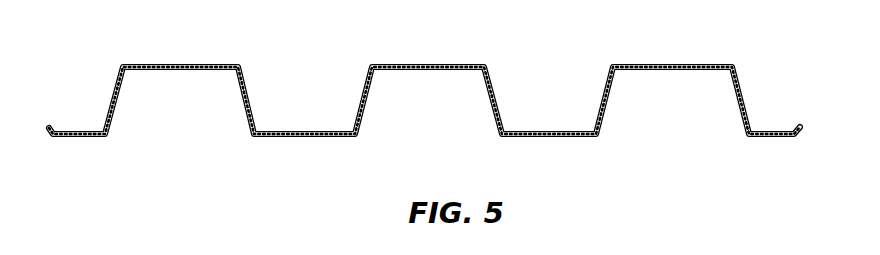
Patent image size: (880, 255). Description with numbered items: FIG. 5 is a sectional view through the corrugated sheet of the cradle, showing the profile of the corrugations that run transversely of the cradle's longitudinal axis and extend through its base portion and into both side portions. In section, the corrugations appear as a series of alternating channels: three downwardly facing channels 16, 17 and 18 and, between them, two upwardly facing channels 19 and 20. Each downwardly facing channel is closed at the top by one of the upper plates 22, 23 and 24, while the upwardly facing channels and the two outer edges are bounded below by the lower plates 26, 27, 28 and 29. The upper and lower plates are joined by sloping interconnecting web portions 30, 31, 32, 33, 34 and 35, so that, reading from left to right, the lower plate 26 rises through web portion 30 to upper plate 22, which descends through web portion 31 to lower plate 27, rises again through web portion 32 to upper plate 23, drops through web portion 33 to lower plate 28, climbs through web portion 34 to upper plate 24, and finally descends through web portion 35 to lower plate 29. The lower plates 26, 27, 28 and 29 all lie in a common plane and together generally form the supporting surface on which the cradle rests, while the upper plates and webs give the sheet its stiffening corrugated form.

The downwardly facing channel 16 is at (166, 104).
The downwardly facing channel 17 is at (432, 110).
The downwardly facing channel 18 is at (697, 116).
The upwardly facing channel 19 is at (302, 84).
The upwardly facing channel 20 is at (540, 80).
The upper plate 22 is at (153, 64).
The upper plate 23 is at (400, 64).
The upper plate 24 is at (632, 64).
The lower plate 26 is at (80, 131).
The lower plate 27 is at (300, 131).
The lower plate 28 is at (520, 131).
The lower plate 29 is at (765, 131).
The interconnecting web portion 30 is at (116, 85).
The interconnecting web portion 31 is at (237, 90).
The interconnecting web portion 32 is at (368, 107).
The interconnecting web portion 33 is at (488, 75).
The interconnecting web portion 34 is at (608, 105).
The interconnecting web portion 35 is at (740, 87).